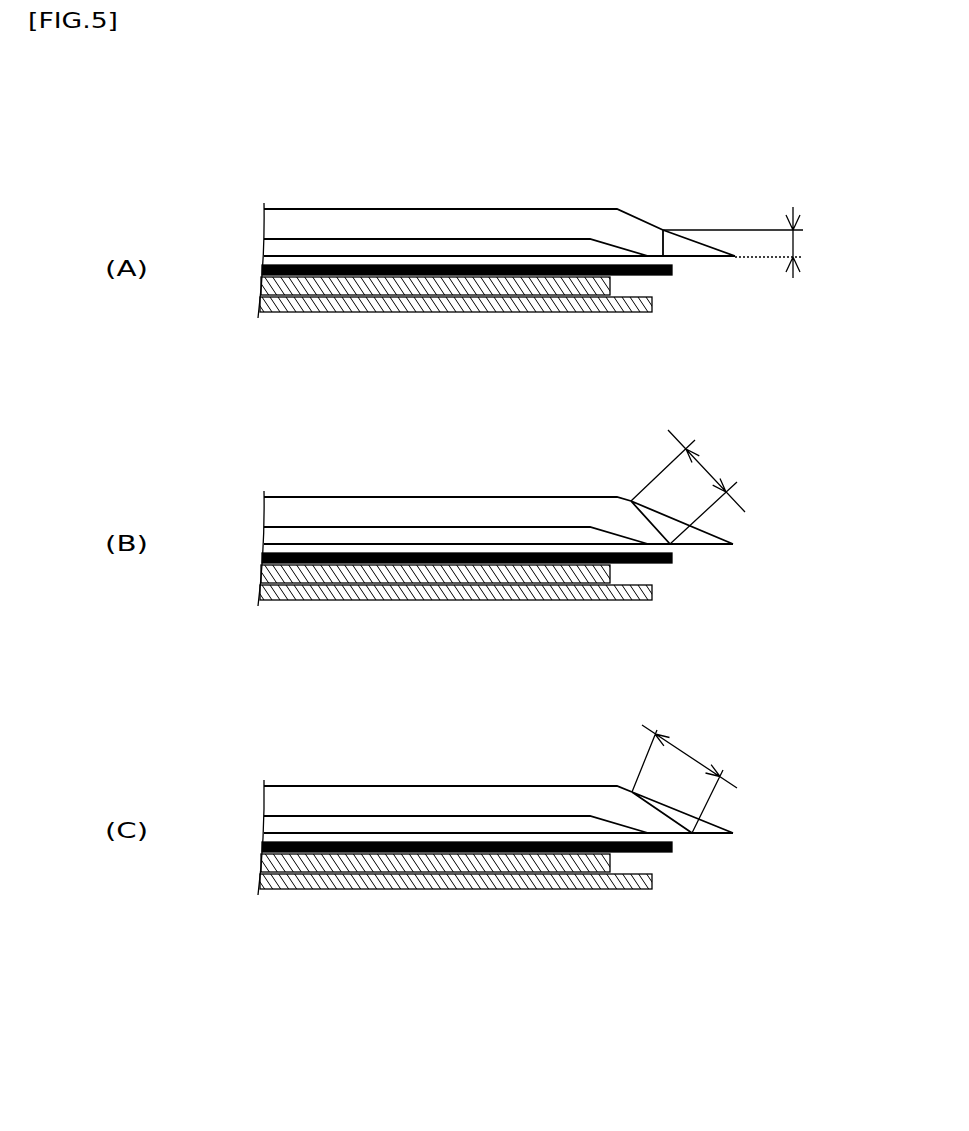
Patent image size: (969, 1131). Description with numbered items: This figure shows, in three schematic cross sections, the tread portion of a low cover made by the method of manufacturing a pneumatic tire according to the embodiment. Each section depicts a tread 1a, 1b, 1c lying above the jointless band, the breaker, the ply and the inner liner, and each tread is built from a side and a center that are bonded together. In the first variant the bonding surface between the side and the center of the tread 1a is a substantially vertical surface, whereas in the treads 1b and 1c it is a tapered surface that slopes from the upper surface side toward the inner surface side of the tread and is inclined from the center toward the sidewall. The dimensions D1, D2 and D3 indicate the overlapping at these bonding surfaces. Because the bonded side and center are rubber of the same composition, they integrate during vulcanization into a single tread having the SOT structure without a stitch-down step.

The tread 1a is at (390, 194).
The tread 1b is at (365, 479).
The tread 1c is at (365, 769).
The overlapping D1 is at (795, 242).
The overlapping D2 is at (706, 470).
The overlapping D3 is at (686, 770).